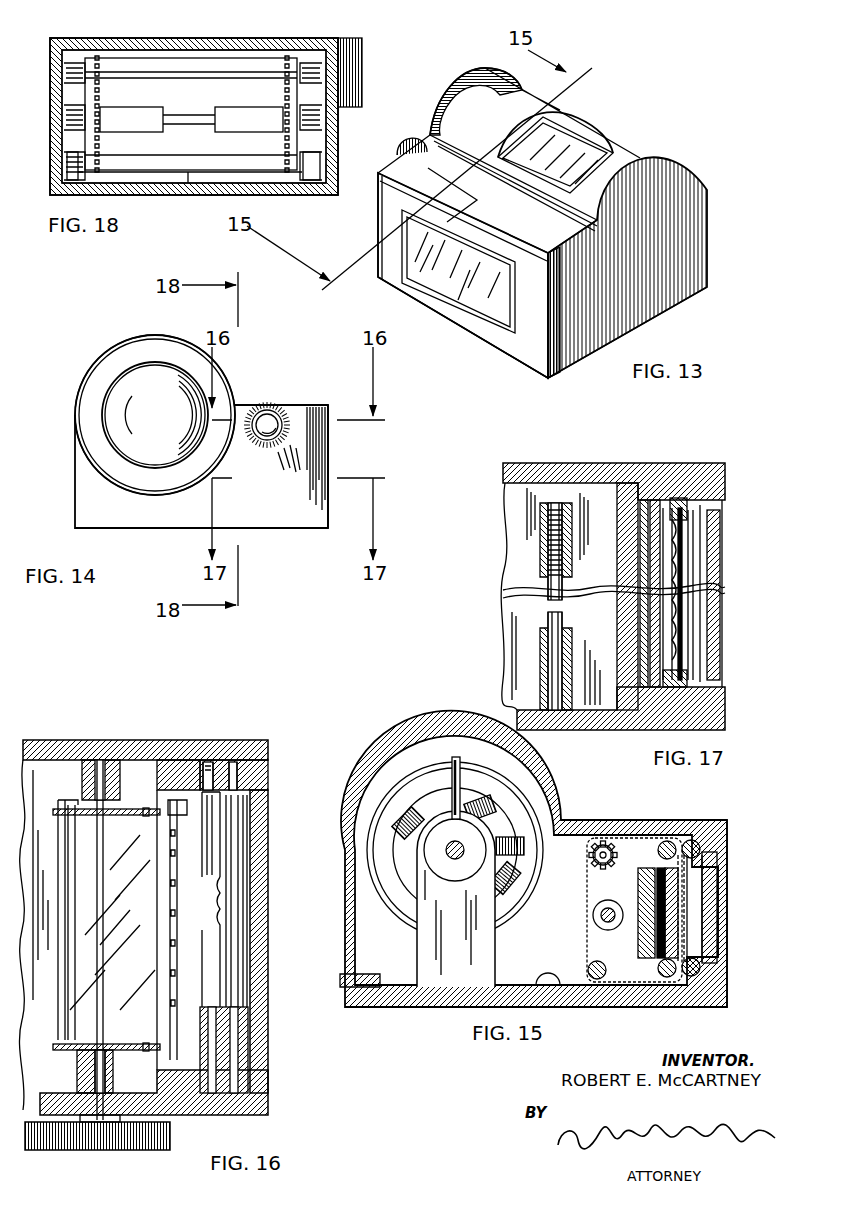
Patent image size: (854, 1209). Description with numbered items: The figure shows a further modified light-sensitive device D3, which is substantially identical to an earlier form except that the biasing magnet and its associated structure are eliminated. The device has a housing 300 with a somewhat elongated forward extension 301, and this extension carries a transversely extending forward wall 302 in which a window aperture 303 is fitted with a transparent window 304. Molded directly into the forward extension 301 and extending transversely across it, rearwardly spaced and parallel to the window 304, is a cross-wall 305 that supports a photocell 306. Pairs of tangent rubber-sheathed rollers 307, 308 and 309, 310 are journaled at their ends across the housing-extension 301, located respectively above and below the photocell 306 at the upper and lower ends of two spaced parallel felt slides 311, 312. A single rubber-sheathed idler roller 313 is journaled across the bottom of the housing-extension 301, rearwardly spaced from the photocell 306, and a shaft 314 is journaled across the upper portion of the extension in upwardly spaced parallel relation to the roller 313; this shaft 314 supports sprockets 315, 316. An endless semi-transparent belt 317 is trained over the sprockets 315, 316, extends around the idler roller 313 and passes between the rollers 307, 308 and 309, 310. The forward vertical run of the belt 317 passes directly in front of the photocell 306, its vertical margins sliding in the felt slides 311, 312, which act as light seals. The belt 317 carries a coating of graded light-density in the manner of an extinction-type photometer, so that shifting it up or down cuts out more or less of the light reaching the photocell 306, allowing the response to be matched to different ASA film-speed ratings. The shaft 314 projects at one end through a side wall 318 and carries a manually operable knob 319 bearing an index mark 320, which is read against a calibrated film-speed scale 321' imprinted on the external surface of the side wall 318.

In FIG. 13, the housing 300 is at (674, 223).
In FIG. 14, the housing 300 is at (235, 382).
In FIG. 16, the housing 300 is at (210, 738).
In FIG. 15, the housing 300 is at (542, 772).
In FIG. 13, the forward extension 301 is at (396, 297).
In FIG. 14, the forward extension 301 is at (332, 473).
In FIG. 15, the forward extension 301 is at (638, 819).
In FIG. 13, the forward wall 302 is at (535, 360).
In FIG. 14, the forward wall 302 is at (330, 445).
In FIG. 17, the forward wall 302 is at (725, 714).
In FIG. 16, the forward wall 302 is at (268, 1082).
In FIG. 15, the forward wall 302 is at (727, 835).
In FIG. 13, the window aperture 303 is at (457, 299).
In FIG. 16, the window aperture 303 is at (266, 1032).
In FIG. 15, the window aperture 303 is at (722, 870).
In FIG. 13, the transparent window 304 is at (505, 303).
In FIG. 16, the transparent window 304 is at (268, 840).
In FIG. 15, the transparent window 304 is at (722, 923).
In FIG. 17, the cross-wall 305 is at (616, 518).
In FIG. 16, the cross-wall 305 is at (160, 760).
In FIG. 15, the cross-wall 305 is at (646, 962).
In FIG. 17, the photocell 306 is at (666, 591).
In FIG. 16, the photocell 306 is at (213, 906).
In FIG. 15, the photocell 306 is at (682, 899).
In FIG. 16, the rubber-sheathed roller 307 is at (254, 793).
In FIG. 15, the rubber-sheathed roller 307 is at (669, 841).
In FIG. 16, the rubber-sheathed roller 308 is at (243, 809).
In FIG. 15, the rubber-sheathed roller 308 is at (700, 838).
In FIG. 15, the rubber-sheathed roller 309 is at (668, 978).
In FIG. 17, the rubber-sheathed roller 310 is at (705, 566).
In FIG. 15, the rubber-sheathed roller 310 is at (691, 978).
In FIG. 17, the felt slide 311 is at (725, 487).
In FIG. 15, the felt slide 311 is at (689, 955).
In FIG. 17, the felt slide 312 is at (725, 689).
In FIG. 18, the idler roller 313 is at (303, 183).
In FIG. 15, the idler roller 313 is at (597, 981).
In FIG. 16, the shaft 314 is at (103, 891).
In FIG. 15, the shaft 314 is at (636, 814).
In FIG. 18, the sprocket 315 is at (99, 54).
In FIG. 16, the sprocket 315 is at (117, 816).
In FIG. 15, the sprocket 315 is at (597, 814).
In FIG. 18, the sprocket 316 is at (288, 54).
In FIG. 16, the sprocket 316 is at (145, 1044).
In FIG. 18, the endless semi-transparent belt 317 is at (255, 145).
In FIG. 16, the endless semi-transparent belt 317 is at (57, 840).
In FIG. 15, the endless semi-transparent belt 317 is at (592, 913).
In FIG. 14, the side wall 318 is at (266, 518).
In FIG. 16, the side wall 318 is at (225, 1117).
In FIG. 18, the knob 319 is at (364, 42).
In FIG. 13, the knob 319 is at (400, 140).
In FIG. 14, the knob 319 is at (283, 428).
In FIG. 16, the knob 319 is at (92, 1150).
In FIG. 14, the index mark 320 is at (250, 416).
In FIG. 14, the bezel 321' is at (290, 388).
In FIG. 13, the light-sensitive device D3 is at (708, 192).
In FIG. 14, the light-sensitive device D3 is at (80, 372).